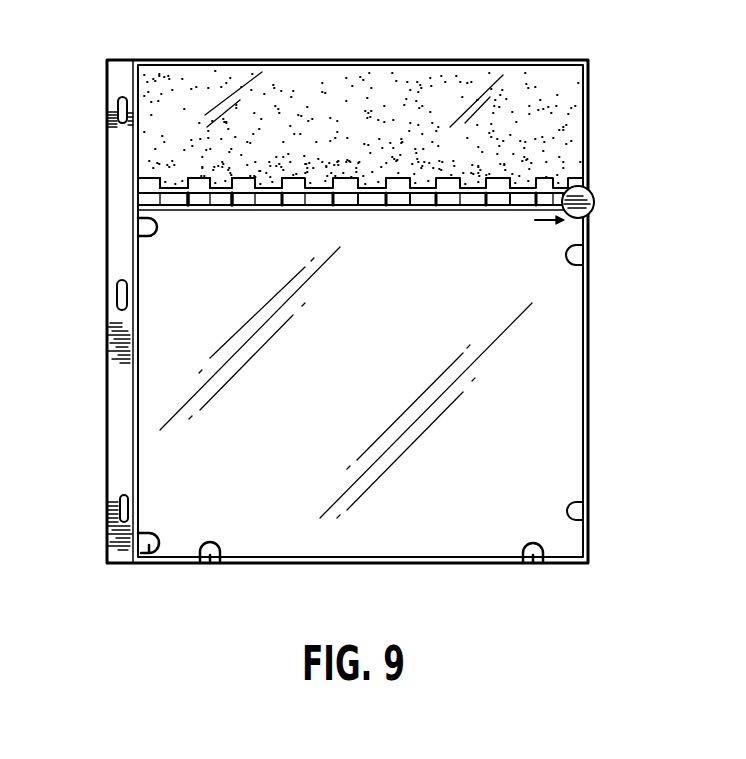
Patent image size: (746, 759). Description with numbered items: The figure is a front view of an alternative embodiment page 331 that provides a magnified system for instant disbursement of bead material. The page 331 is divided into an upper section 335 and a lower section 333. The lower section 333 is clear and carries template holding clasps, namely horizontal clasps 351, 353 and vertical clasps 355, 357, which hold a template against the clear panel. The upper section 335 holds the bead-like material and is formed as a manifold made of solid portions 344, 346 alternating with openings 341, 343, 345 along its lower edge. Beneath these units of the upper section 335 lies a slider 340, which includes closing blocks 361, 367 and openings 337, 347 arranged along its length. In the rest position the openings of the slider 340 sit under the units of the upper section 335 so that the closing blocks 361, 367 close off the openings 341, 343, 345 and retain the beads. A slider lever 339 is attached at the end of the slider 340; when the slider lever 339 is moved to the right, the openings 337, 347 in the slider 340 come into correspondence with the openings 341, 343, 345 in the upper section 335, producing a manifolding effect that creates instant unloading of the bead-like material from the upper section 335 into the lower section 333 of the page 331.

The page 331 is at (490, 52).
The lower section 333 is at (171, 402).
The upper section 335 is at (286, 88).
The opening 337 is at (338, 206).
The slider lever 339 is at (594, 205).
The slider 340 is at (517, 206).
The opening 341 is at (170, 186).
The opening 343 is at (214, 184).
The solid portion 344 is at (195, 187).
The opening 345 is at (268, 186).
The solid portion 346 is at (238, 187).
The opening 347 is at (397, 206).
The horizontal clasp 351 is at (151, 553).
The horizontal clasp 353 is at (137, 228).
The vertical clasp 355 is at (210, 563).
The vertical clasp 357 is at (532, 565).
The closing block 361 is at (371, 196).
The closing block 367 is at (418, 196).